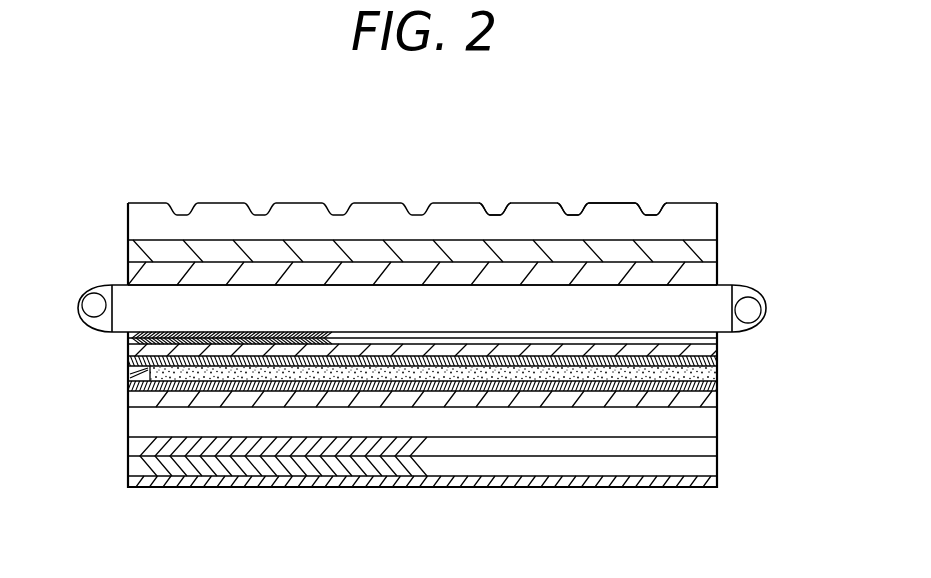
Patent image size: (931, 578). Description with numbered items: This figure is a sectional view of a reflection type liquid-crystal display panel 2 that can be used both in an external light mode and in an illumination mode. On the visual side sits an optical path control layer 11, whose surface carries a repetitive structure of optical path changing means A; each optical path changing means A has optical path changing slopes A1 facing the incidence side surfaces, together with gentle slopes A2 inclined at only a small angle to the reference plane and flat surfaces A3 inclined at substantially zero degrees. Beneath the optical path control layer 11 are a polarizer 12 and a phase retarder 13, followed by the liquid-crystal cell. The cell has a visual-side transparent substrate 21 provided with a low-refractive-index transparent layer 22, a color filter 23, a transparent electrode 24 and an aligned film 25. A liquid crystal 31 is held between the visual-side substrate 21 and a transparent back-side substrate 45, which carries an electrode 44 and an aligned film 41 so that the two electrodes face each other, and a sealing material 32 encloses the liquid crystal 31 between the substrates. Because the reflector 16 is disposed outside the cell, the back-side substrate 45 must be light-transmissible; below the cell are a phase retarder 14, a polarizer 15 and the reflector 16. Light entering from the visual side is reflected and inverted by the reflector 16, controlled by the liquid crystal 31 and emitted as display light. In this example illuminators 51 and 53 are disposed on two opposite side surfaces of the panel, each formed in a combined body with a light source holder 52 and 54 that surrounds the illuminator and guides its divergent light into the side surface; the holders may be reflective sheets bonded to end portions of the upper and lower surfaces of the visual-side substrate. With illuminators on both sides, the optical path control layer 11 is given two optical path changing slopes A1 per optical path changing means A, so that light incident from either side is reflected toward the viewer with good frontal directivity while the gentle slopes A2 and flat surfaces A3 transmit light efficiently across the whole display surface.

The liquid-crystal display panel 2 is at (215, 156).
The optical path control layer 11 is at (718, 226).
The polarizer 12 is at (718, 253).
The phase retarder 13 is at (718, 277).
The phase retarder 14 is at (668, 450).
The polarizer 15 is at (612, 468).
The reflector 16 is at (550, 482).
The transparent substrate 21 is at (722, 285).
The low-refractive-index transparent layer 22 is at (718, 335).
The color filter 23 is at (718, 348).
The transparent electrode 24 is at (718, 357).
The aligned film 25 is at (695, 378).
The liquid crystal 31 is at (718, 383).
The sealing material 32 is at (718, 390).
The aligned film 41 is at (718, 403).
The electrode 44 is at (718, 427).
The back-side substrate 45 is at (722, 427).
The illuminator 51 is at (92, 304).
The light source holder 52 is at (94, 331).
The illuminator 53 is at (749, 303).
The light source holder 54 is at (766, 305).
The optical path changing means A is at (501, 203).
The optical path changing slope A1 is at (566, 205).
The gentle slope A2 is at (655, 213).
The flat surface A3 is at (618, 203).